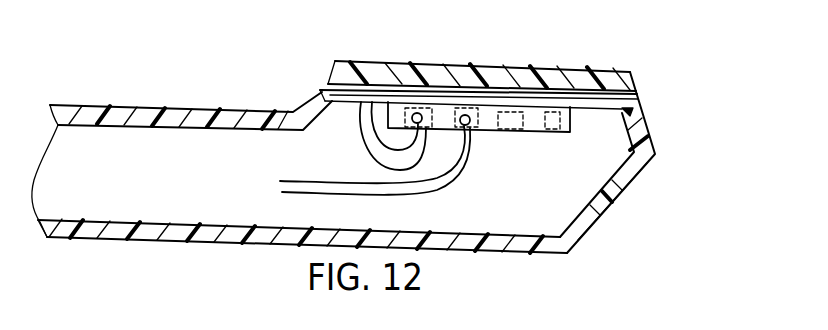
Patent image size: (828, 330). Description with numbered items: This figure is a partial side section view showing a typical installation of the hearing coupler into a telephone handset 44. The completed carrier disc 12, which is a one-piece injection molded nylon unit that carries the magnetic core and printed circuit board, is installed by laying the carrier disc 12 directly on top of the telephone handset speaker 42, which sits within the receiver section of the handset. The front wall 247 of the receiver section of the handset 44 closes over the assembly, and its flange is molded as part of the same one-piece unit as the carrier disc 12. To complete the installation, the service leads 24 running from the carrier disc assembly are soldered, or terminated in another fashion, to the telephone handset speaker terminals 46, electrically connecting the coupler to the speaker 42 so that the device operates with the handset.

The carrier disc 12 is at (348, 85).
The service leads 24 is at (370, 153).
The telephone handset speaker 42 is at (532, 132).
The telephone handset 44 is at (130, 106).
The telephone handset speaker terminals 46 is at (466, 114).
The front wall 247 is at (527, 76).